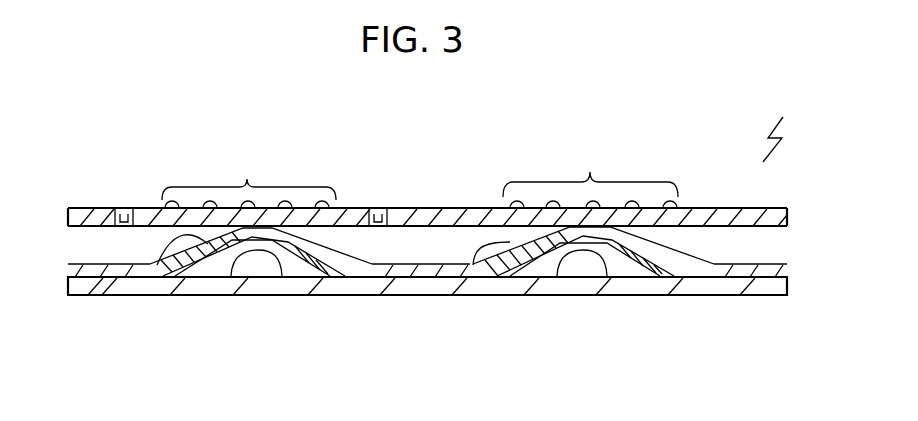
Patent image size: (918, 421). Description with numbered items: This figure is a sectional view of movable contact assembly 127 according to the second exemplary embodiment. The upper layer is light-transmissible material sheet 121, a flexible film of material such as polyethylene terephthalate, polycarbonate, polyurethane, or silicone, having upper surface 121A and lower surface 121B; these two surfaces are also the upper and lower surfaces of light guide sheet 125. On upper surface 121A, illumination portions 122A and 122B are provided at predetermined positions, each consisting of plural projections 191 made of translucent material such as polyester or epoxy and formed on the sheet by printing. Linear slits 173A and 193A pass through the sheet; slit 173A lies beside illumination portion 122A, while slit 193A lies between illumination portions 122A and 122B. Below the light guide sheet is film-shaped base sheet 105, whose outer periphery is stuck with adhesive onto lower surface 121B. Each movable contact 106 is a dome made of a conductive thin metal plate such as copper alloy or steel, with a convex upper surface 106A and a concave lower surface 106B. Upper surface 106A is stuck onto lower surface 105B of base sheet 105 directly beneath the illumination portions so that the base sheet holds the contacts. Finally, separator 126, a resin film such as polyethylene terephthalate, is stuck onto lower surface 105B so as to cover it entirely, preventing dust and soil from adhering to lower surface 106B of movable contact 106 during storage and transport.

The base sheet 105 is at (410, 266).
The lower surface of base sheet 105B is at (380, 266).
The movable contact 106 is at (282, 262).
The upper surface of movable contact 106A is at (163, 262).
The lower surface of movable contact 106B is at (222, 270).
The light-transmissible material sheet 121 is at (430, 210).
The upper surface of material sheet 121A is at (102, 208).
The lower surface of material sheet 121B is at (89, 227).
The illumination portion 122A is at (249, 174).
The illumination portion 122B is at (590, 173).
The light guide sheet 125 is at (757, 208).
The separator 126 is at (652, 290).
The movable contact assembly 127 is at (782, 129).
The slit 173A is at (124, 219).
The projections 191 is at (245, 201).
The slit 193A is at (377, 208).